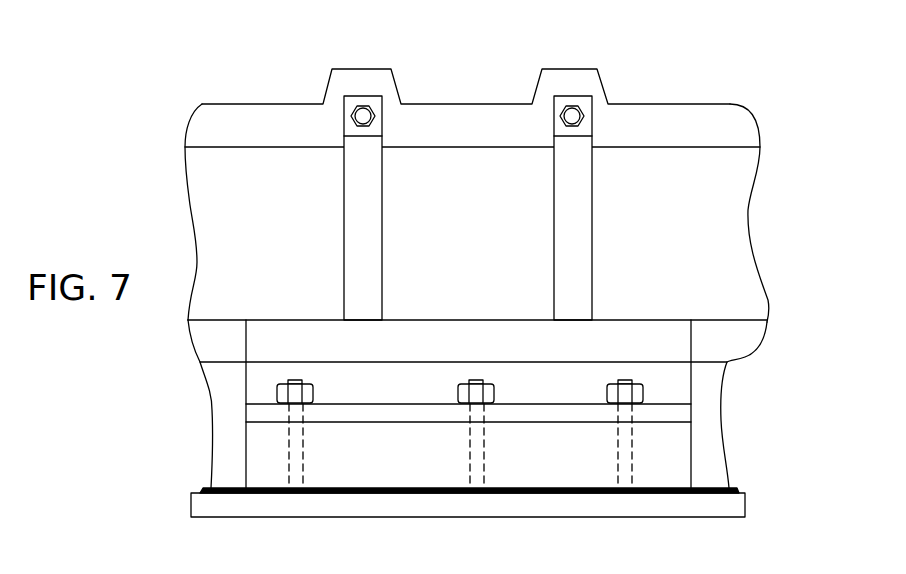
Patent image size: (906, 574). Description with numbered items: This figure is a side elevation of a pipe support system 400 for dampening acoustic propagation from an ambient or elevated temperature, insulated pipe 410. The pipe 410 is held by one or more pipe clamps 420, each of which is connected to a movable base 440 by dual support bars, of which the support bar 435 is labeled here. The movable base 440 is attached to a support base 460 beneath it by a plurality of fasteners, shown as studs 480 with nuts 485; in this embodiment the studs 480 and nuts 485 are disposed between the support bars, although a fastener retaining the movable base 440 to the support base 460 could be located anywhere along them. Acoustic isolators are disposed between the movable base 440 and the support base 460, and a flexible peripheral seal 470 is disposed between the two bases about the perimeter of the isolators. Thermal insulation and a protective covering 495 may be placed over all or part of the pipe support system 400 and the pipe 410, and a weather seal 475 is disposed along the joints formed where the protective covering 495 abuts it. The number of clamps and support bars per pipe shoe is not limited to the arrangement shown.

The pipe support system 400 is at (176, 50).
The pipe 410 is at (655, 147).
The protective covering 495 is at (721, 105).
The pipe clamp 420 is at (592, 225).
The support bar 435 is at (495, 353).
The flexible peripheral seal 470 is at (675, 451).
The movable base 440 is at (680, 413).
The stud 480 is at (622, 380).
The nut 485 is at (645, 391).
The weather seal 475 is at (739, 491).
The support base 460 is at (733, 503).